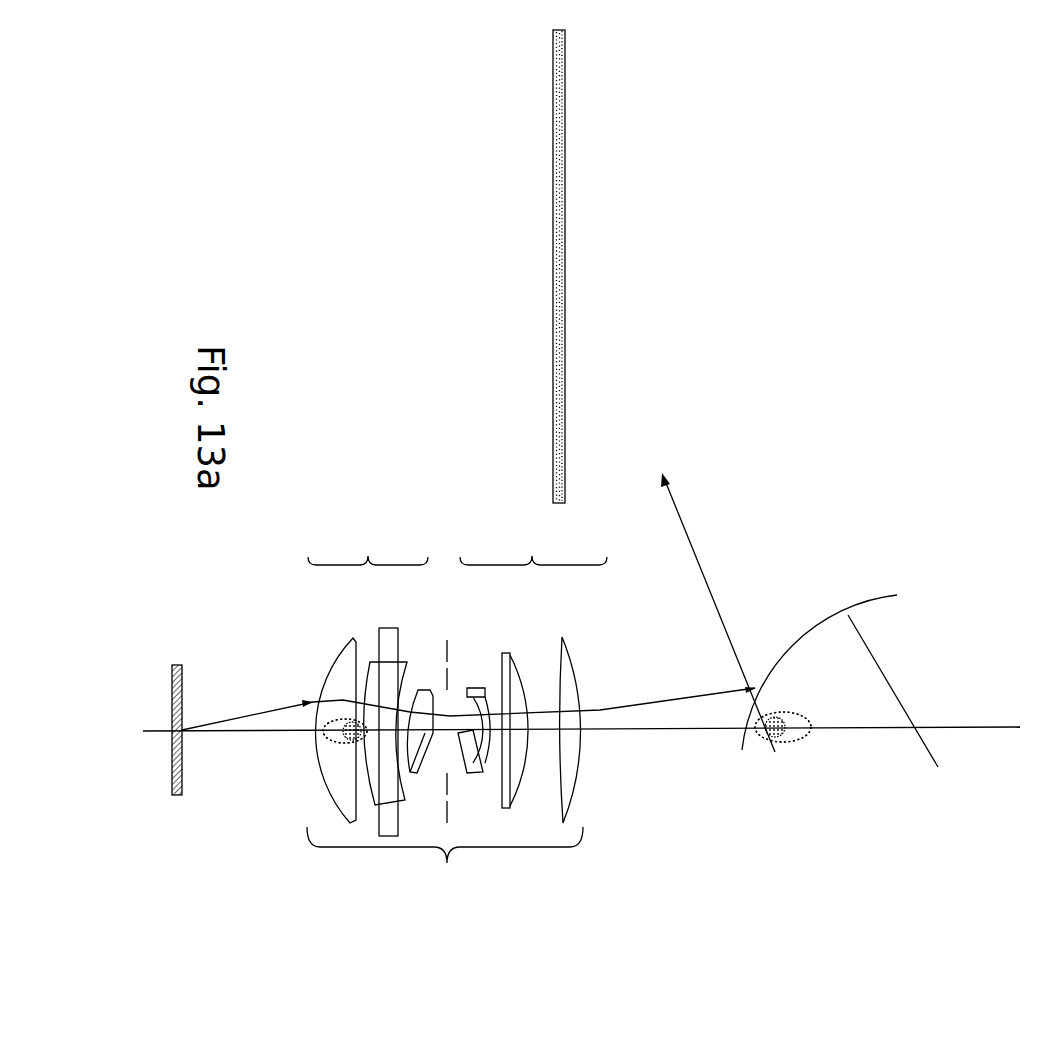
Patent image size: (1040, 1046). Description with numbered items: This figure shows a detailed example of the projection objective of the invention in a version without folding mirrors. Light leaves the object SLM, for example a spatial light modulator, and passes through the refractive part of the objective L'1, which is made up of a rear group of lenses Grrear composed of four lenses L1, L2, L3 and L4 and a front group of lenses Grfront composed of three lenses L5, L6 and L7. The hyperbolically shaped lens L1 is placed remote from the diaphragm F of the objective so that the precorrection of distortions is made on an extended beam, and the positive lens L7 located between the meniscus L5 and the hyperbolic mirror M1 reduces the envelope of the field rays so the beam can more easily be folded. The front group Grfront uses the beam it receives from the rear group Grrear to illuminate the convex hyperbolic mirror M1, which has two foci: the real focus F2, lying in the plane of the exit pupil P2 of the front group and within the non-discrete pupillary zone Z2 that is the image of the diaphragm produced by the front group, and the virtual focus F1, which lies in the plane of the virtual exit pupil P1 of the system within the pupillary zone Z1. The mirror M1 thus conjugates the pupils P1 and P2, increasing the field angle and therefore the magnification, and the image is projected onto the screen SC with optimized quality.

The spatial light modulator SLM is at (177, 748).
The real focus F2 is at (324, 719).
The exit pupillary zone Z2 is at (317, 737).
The exit pupil of the front group P2 is at (327, 758).
The hyperbolically shaped lens L1 is at (345, 677).
The lens L2 is at (382, 675).
The lens L3 is at (392, 683).
The lens L4 is at (422, 690).
The diaphragm F is at (445, 716).
The meniscus L5 is at (478, 688).
The lens L6 is at (518, 663).
The positive lens L7 is at (565, 636).
The rear group of lenses Grrear is at (368, 555).
The front group of lenses Grfront is at (532, 552).
The objective lens system L'1 is at (445, 865).
The screen SC is at (553, 265).
The hyperbolic mirror M1 is at (897, 597).
The pupillary zone Z1 is at (805, 712).
The virtual exit pupil of the system P1 is at (777, 740).
The virtual focus F1 is at (777, 740).